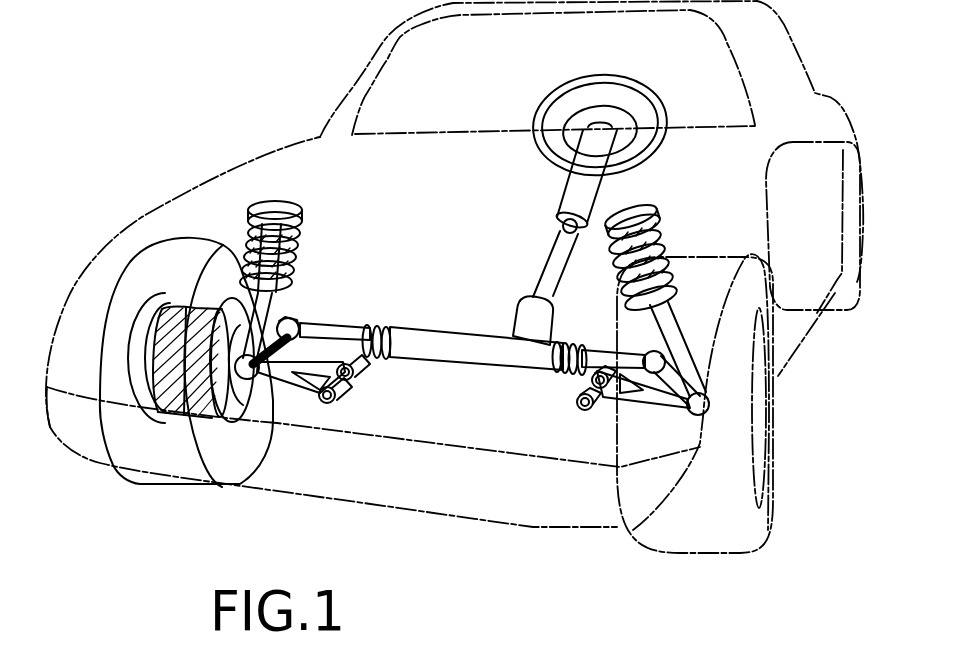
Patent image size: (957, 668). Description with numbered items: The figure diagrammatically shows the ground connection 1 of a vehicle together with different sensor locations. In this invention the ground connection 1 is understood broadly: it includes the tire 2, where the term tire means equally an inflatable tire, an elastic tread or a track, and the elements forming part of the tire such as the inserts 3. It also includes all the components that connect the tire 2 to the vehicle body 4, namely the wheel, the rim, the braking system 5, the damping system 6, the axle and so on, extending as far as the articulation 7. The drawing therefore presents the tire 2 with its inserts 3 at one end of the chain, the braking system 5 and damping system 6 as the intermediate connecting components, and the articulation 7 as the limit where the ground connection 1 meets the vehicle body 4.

The ground connection 1 is at (181, 172).
The tire 2 is at (133, 478).
The inserts 3 is at (190, 306).
The vehicle body 4 is at (487, 350).
The braking system 5 is at (250, 390).
The damping system 6 is at (275, 208).
The articulation 7 is at (292, 322).